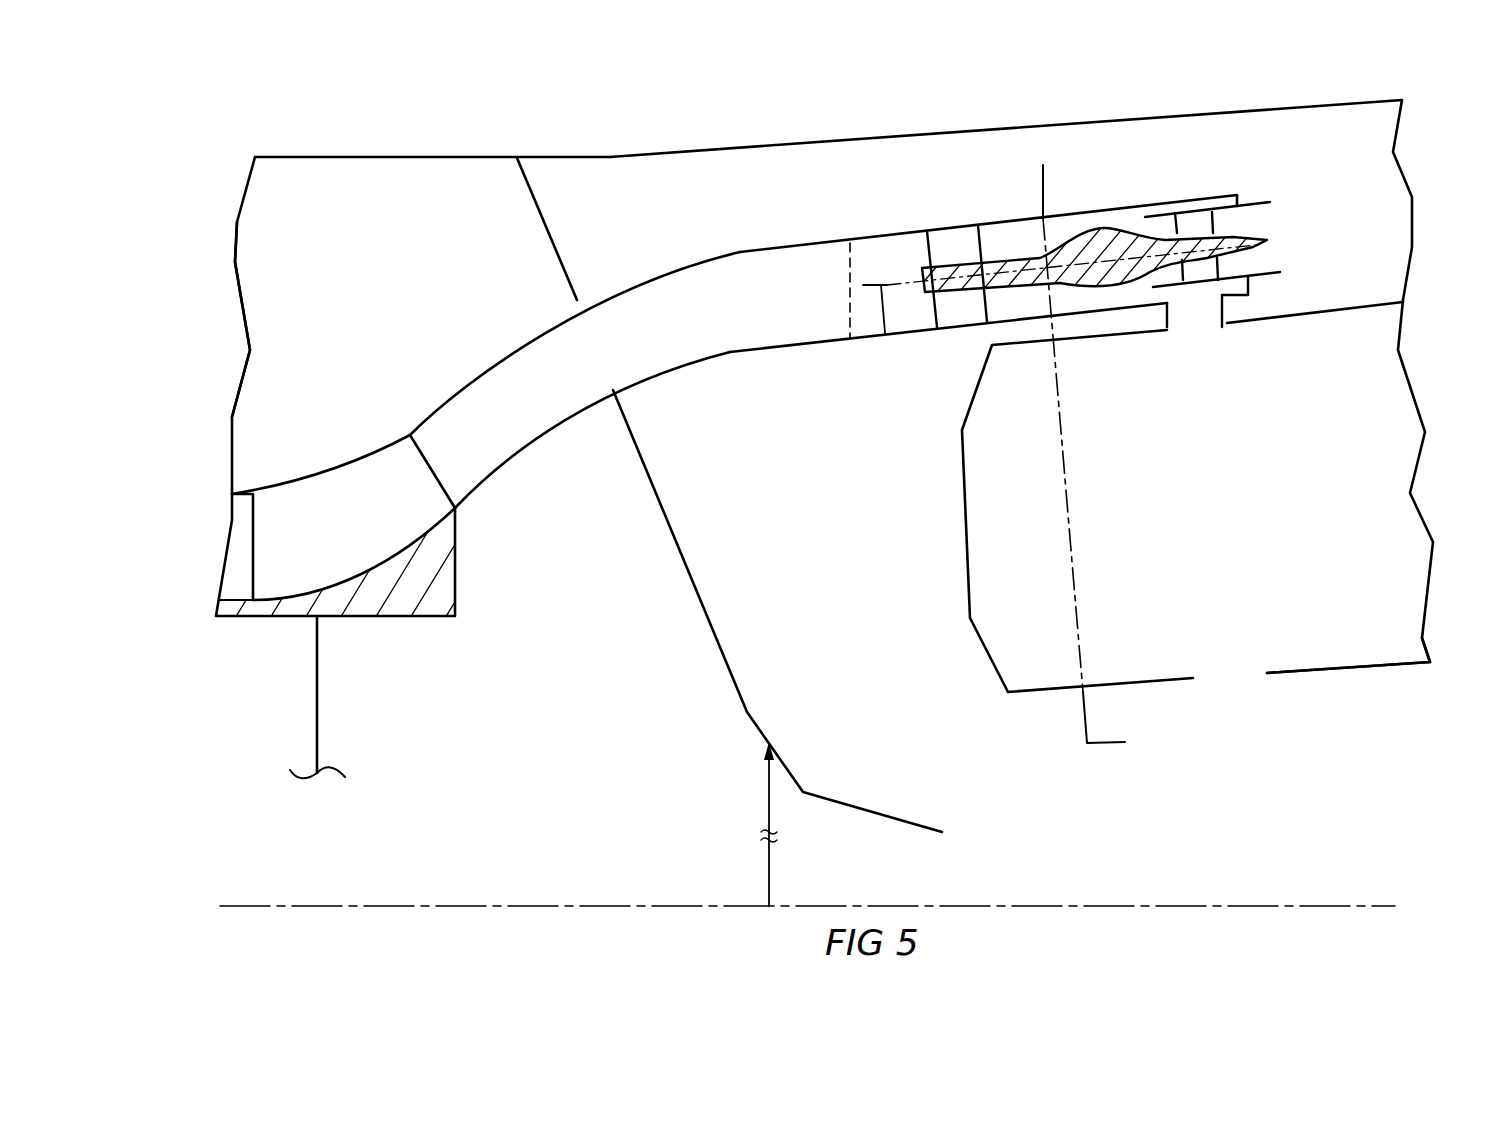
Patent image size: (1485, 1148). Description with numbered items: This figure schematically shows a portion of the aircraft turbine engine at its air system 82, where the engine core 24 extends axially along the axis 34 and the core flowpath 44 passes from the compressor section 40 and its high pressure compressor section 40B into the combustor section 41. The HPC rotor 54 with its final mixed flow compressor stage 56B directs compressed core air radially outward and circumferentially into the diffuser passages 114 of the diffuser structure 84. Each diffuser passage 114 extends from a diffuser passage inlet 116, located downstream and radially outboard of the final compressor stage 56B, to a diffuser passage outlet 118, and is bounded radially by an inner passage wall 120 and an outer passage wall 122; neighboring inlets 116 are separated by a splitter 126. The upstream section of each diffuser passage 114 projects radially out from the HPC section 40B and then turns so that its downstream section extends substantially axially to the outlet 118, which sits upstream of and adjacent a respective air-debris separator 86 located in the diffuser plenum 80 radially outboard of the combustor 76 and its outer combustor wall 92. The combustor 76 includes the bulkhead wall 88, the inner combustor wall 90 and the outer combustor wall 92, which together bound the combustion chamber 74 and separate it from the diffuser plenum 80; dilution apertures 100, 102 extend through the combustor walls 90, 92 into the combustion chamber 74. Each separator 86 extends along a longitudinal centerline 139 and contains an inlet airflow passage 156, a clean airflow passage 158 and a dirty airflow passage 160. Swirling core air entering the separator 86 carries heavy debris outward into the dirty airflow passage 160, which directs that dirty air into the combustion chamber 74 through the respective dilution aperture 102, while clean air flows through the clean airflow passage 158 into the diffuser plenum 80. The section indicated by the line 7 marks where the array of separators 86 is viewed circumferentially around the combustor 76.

The engine core 24 is at (385, 337).
The axis 34 is at (255, 907).
The compressor section 40 is at (189, 319).
The high pressure compressor (HPC) section 40B is at (260, 320).
The combustor section 41 is at (1150, 95).
The core flowpath 44 is at (215, 553).
The high pressure compressor (HPC) rotor 54 is at (345, 703).
The final mixed flow compressor stage 56B is at (330, 480).
The combustion chamber 74 is at (1258, 508).
The combustor 76 is at (1380, 285).
The diffuser plenum 80 is at (1346, 177).
The air system 82 is at (785, 180).
The diffuser structure 84 is at (936, 326).
The air-debris separator 86 is at (1112, 195).
The combustor bulkhead wall 88 is at (963, 502).
The inner combustor wall 90 is at (1310, 665).
The outer combustor wall 92 is at (1340, 310).
The dilution aperture 100 is at (1267, 673).
The dilution aperture 102 is at (1223, 327).
The diffuser passage 114 is at (573, 370).
The diffuser passage inlet 116 is at (420, 452).
The diffuser passage outlet 118 is at (853, 318).
The inner passage wall 120 is at (640, 375).
The outer passage wall 122 is at (626, 282).
The splitter 126 is at (475, 488).
The longitudinal centerline 139 is at (885, 333).
The inlet airflow passage 156 is at (905, 246).
The clean airflow passage 158 is at (1268, 220).
The dirty airflow passage 160 is at (1195, 355).
The section line 7 is at (1043, 165).